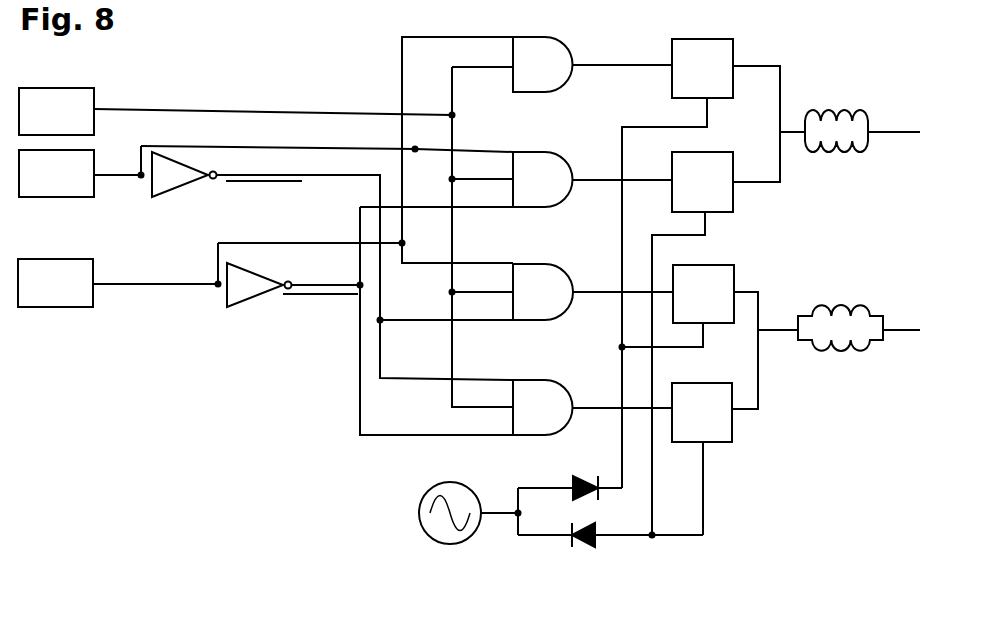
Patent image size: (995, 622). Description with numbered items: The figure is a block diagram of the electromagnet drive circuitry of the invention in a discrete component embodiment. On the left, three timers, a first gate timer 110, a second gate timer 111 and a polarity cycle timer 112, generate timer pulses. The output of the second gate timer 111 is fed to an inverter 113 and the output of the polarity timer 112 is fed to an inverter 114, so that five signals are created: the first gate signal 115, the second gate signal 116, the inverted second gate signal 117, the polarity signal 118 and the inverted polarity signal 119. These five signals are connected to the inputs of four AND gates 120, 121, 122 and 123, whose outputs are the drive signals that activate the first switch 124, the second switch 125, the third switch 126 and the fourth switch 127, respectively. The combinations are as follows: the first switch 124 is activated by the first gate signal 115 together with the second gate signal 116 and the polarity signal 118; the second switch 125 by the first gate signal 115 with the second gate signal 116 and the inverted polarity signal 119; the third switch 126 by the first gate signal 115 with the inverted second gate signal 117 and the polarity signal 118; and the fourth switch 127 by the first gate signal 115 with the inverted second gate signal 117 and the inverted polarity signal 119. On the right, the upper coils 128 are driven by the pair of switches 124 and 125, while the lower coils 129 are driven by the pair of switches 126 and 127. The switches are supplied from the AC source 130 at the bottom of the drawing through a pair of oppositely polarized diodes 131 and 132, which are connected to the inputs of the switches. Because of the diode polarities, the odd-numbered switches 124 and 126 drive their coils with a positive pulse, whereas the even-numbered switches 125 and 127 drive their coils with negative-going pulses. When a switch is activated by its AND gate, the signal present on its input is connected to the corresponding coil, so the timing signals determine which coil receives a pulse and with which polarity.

The Gate 1 timer 110 is at (84, 82).
The Gate 2 timer 111 is at (65, 198).
The Polarity cycle timer 112 is at (66, 309).
The inverter 113 is at (170, 190).
The inverter 114 is at (257, 287).
The Gate 1 signal 115 is at (347, 112).
The Gate 2 signal 116 is at (370, 147).
The NOT Gate 2 signal 117 is at (315, 180).
The Pol signal 118 is at (352, 245).
The NOT Pol signal 119 is at (358, 385).
The AND gate 120 is at (559, 49).
The AND gate 121 is at (562, 166).
The AND gate 122 is at (560, 277).
The AND gate 123 is at (559, 390).
The switch SW1 124 is at (733, 48).
The switch SW2 125 is at (730, 200).
The switch SW3 126 is at (735, 282).
The switch SW4 127 is at (733, 428).
The upper coils 128 is at (858, 105).
The lower coils 129 is at (887, 290).
The AC source 130 is at (418, 512).
The diode 131 is at (570, 477).
The diode 132 is at (610, 553).